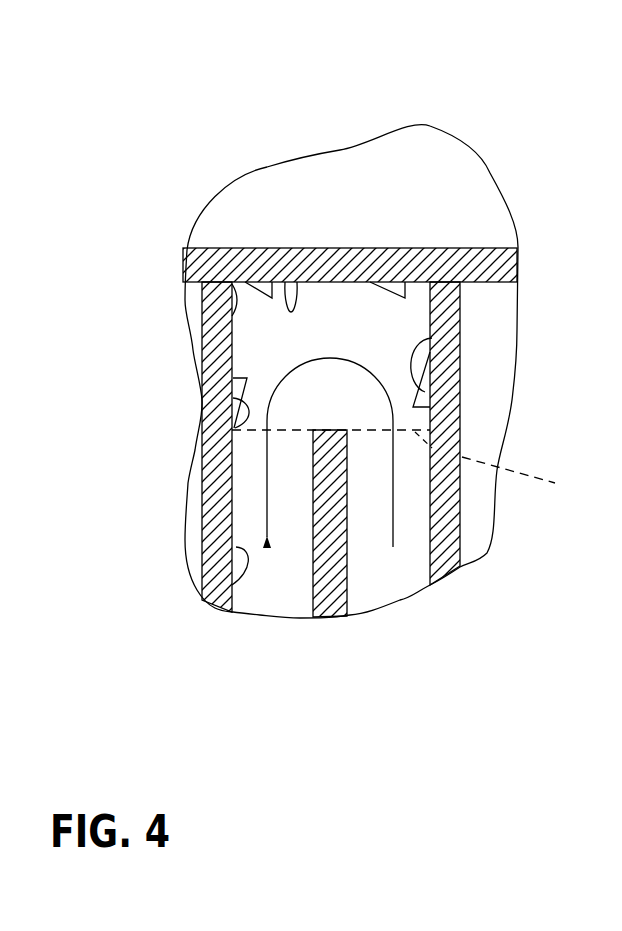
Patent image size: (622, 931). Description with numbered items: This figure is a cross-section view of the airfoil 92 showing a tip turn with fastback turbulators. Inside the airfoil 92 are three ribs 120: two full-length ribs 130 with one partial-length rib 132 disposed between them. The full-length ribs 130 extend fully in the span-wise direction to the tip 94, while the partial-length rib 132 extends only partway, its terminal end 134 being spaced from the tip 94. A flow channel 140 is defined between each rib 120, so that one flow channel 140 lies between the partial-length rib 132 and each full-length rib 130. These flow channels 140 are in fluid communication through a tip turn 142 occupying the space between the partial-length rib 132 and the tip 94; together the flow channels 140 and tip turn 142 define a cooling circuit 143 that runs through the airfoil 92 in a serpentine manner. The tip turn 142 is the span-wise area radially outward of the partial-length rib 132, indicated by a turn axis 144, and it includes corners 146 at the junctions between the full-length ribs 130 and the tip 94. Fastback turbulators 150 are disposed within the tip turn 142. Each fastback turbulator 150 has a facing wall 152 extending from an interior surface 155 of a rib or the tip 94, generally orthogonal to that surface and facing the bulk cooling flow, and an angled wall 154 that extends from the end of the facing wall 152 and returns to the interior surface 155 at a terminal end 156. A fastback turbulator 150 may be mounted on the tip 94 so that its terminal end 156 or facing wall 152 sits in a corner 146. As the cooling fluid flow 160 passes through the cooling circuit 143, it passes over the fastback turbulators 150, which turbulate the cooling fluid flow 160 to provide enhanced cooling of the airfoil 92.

The airfoil 92 is at (122, 165).
The tip 94 is at (320, 238).
The ribs 120 is at (197, 525).
The full-length ribs 130 is at (203, 482).
The partial-length rib 132 is at (313, 585).
The terminal end 134 is at (325, 430).
The flow channel 140 is at (255, 570).
The tip turn 142 is at (403, 330).
The cooling circuit 143 is at (246, 620).
The turn axis 144 is at (410, 465).
The corners 146 is at (230, 277).
The fastback turbulator 150 is at (259, 252).
The facing wall 152 is at (242, 378).
The angled wall 154 is at (240, 427).
The interior surface 155 is at (275, 282).
The terminal end 156 is at (240, 308).
The cooling fluid flow 160 is at (390, 507).